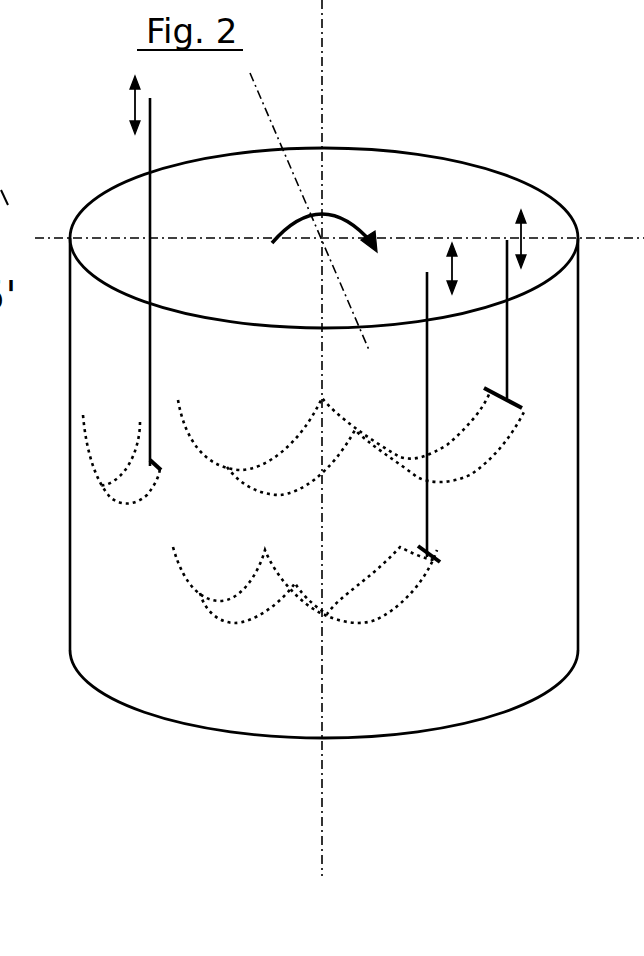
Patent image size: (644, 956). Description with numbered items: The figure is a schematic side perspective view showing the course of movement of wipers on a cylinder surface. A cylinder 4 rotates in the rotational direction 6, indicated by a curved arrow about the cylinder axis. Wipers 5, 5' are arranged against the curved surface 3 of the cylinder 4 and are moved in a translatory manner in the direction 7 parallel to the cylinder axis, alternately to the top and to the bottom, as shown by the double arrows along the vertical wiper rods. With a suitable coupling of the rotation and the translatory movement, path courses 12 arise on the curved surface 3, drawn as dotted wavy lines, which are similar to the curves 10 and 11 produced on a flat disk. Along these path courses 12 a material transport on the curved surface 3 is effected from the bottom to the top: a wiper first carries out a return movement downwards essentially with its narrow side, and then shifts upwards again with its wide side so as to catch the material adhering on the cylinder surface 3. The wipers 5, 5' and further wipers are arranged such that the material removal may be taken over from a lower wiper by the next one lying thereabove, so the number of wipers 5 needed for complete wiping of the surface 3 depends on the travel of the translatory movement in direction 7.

The curved surface 3 is at (508, 639).
The cylinder 4 is at (541, 190).
The wiper 5 is at (327, 360).
The wiper 5' is at (528, 403).
The rotational direction 6 is at (368, 222).
The direction 7 is at (134, 100).
The curve 10 is at (8, 566).
The curve 11 is at (0, 347).
The path courses 12 is at (252, 468).